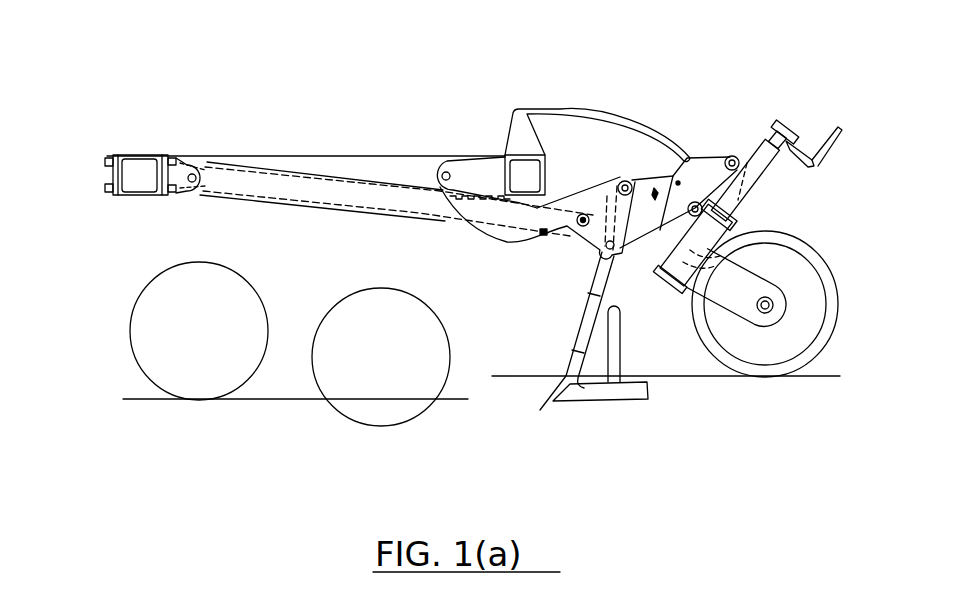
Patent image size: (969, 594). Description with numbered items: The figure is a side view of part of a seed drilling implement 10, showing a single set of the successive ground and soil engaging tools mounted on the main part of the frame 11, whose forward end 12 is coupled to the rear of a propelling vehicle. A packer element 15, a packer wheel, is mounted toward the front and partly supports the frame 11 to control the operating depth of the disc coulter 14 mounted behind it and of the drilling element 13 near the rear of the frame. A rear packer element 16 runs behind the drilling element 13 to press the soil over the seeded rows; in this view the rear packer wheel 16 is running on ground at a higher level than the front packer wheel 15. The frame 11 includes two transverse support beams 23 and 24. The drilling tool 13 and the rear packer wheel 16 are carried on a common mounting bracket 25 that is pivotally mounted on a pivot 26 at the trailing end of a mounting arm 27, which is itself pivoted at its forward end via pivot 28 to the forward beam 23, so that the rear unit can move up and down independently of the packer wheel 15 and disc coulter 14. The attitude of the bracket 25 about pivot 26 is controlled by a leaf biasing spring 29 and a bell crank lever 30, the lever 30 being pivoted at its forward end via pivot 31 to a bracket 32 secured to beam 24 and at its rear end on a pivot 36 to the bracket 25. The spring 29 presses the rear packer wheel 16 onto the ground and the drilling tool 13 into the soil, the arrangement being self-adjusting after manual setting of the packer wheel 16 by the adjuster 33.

The seed drilling implement 10 is at (323, 150).
The frame 11 is at (382, 172).
The forward end of the frame 12 is at (93, 158).
The drilling element 13 is at (576, 314).
The coulter 14 is at (390, 364).
The packer element 15 is at (193, 347).
The rear packer element 16 is at (823, 261).
The support beam 23 is at (134, 172).
The support beam 24 is at (527, 175).
The mounting bracket 25 is at (656, 195).
The pivot 26 is at (577, 230).
The mounting arm 27 is at (310, 186).
The pivot 28 is at (193, 170).
The biasing spring 29 is at (603, 140).
The bell crank lever 30 is at (478, 212).
The pivot 31 is at (445, 171).
The bracket 32 is at (487, 168).
The adjuster 33 is at (745, 158).
The pivot 36 is at (628, 182).